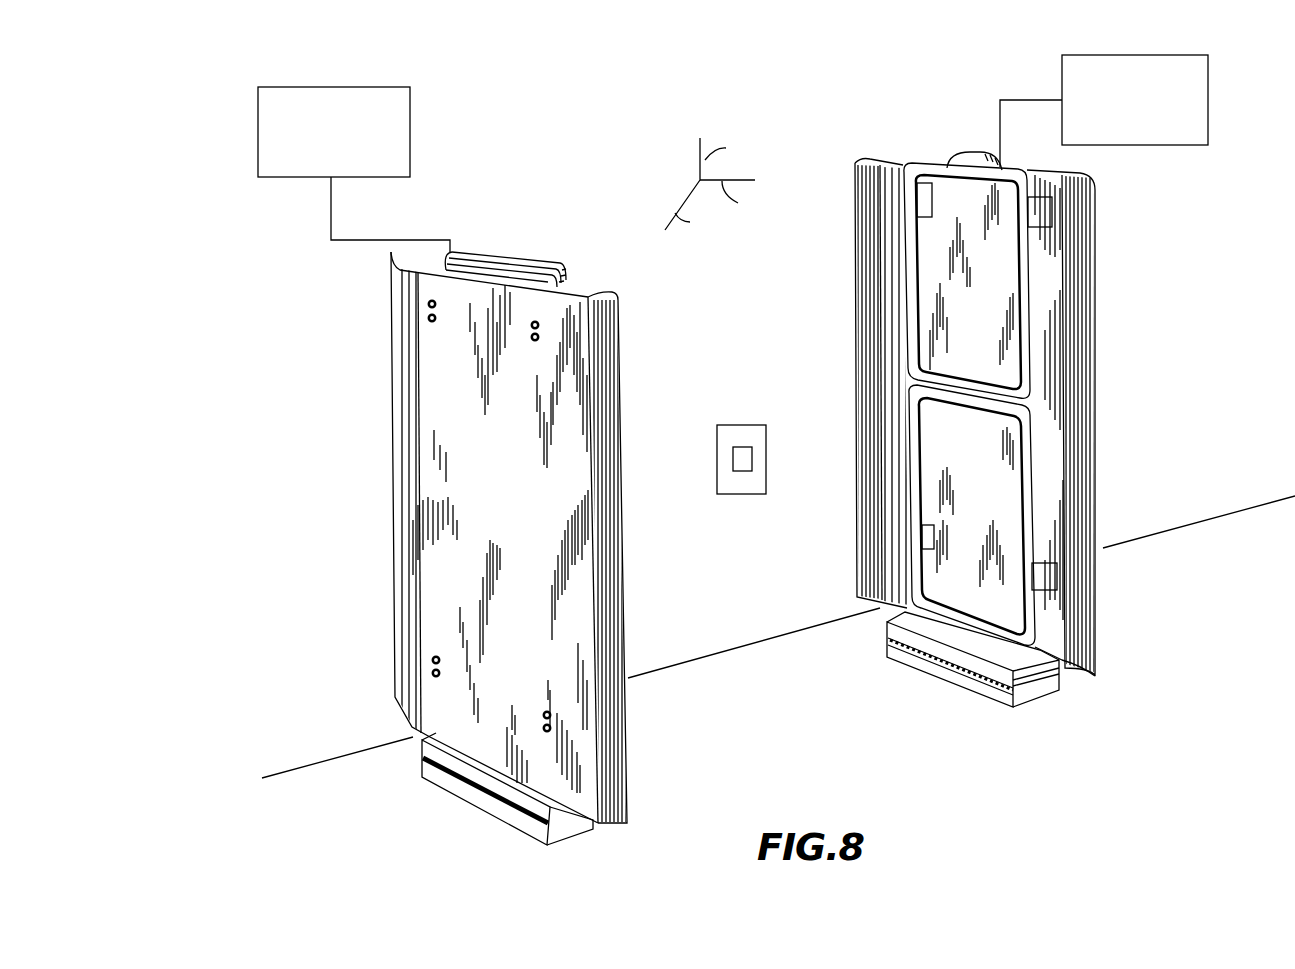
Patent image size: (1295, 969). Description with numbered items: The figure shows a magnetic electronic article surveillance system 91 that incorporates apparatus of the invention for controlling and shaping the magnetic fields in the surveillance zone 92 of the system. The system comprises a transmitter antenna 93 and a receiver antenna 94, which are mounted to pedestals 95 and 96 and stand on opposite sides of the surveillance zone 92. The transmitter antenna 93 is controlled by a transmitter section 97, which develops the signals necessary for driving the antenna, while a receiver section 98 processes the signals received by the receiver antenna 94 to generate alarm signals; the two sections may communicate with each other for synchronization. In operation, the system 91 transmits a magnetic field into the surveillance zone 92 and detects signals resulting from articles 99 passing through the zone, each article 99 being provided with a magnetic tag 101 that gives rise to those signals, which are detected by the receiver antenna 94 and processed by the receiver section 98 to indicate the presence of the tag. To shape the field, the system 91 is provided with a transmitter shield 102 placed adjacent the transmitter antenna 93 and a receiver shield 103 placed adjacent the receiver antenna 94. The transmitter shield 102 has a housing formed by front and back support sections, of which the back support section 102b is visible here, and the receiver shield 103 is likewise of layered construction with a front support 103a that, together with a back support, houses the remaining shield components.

The magnetic electronic article surveillance system 91 is at (655, 143).
The surveillance zone 92 is at (770, 277).
The transmitter antenna 93 is at (447, 255).
The receiver antenna 94 is at (941, 165).
The pedestal 95 is at (560, 836).
The pedestal 96 is at (1050, 688).
The transmitter section 97 is at (258, 90).
The receiver section 98 is at (1200, 112).
The article 99 is at (750, 459).
The magnetic tag 101 is at (752, 462).
The transmitter shield 102 is at (456, 537).
The back support section 102b is at (422, 473).
The receiver shield 103 is at (1035, 418).
The front support 103a is at (1060, 262).